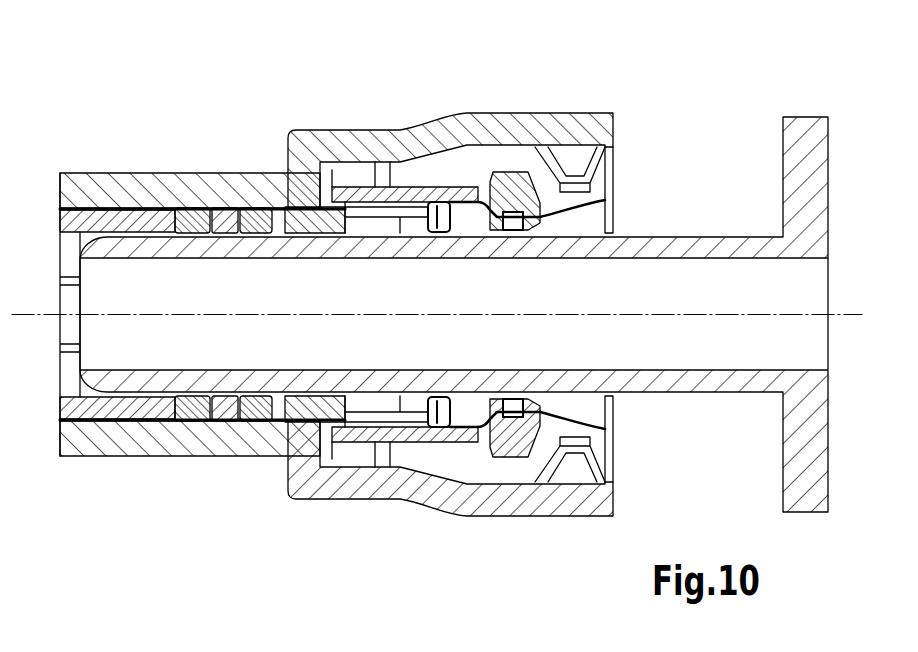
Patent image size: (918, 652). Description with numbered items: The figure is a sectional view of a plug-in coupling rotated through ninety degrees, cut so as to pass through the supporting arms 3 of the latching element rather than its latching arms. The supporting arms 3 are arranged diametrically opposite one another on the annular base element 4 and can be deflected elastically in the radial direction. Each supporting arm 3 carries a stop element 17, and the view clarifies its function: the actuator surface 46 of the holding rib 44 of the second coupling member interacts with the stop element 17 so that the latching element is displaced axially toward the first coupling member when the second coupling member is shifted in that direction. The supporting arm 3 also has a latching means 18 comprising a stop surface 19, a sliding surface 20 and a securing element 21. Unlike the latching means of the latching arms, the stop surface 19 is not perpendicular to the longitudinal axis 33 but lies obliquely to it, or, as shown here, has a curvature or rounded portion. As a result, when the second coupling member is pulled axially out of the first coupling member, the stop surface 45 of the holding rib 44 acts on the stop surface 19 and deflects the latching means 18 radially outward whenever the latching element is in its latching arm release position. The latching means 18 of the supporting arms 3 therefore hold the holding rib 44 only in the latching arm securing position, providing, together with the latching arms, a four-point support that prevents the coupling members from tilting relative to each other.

The supporting arm 3 is at (408, 186).
The base element 4 is at (319, 205).
The stop element 17 is at (438, 186).
The latching means 18 is at (553, 156).
The stop surface 19 is at (480, 196).
The sliding surface 20 is at (605, 200).
The securing element 21 is at (510, 172).
The longitudinal axis 33 is at (125, 315).
The holding rib 44 is at (475, 412).
The stop surface 45 is at (500, 400).
The actuator surface 46 is at (437, 442).